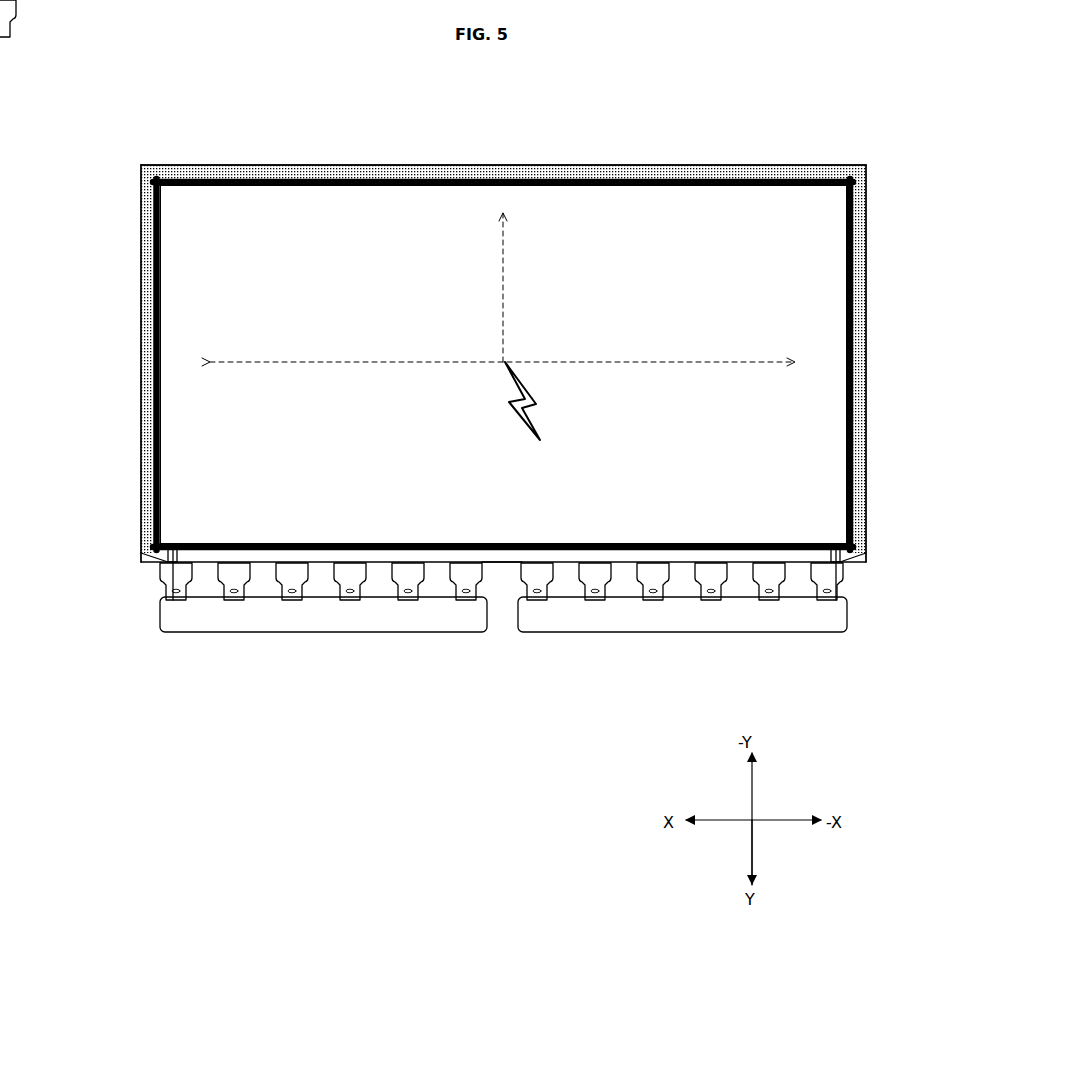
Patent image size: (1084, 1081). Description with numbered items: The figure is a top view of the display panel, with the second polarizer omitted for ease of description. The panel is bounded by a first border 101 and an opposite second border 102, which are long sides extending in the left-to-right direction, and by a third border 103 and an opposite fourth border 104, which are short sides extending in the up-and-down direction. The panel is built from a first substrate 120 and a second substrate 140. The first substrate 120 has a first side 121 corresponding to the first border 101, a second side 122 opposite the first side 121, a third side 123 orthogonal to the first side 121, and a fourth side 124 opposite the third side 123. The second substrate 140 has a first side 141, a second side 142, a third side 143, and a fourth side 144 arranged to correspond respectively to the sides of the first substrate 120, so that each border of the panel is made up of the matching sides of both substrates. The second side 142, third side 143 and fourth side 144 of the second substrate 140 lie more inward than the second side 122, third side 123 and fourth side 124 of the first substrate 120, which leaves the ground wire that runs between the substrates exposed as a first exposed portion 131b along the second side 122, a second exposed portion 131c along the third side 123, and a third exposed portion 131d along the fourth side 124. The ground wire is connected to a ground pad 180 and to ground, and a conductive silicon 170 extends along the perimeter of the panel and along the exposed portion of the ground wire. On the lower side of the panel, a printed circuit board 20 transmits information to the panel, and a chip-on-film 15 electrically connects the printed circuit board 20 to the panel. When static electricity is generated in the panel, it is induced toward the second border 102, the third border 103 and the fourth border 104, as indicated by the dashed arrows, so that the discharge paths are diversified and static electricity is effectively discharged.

The chip-on-film 15 is at (160, 578).
The printed circuit board 20 is at (207, 630).
The first border 101 is at (500, 585).
The second border 102 is at (657, 149).
The third border 103 is at (870, 440).
The fourth border 104 is at (129, 480).
The first substrate 120 is at (505, 558).
The first side 121 is at (445, 568).
The second side 122 is at (555, 168).
The third side 123 is at (867, 256).
The fourth side 124 is at (141, 243).
The first exposed portion 131b is at (347, 180).
The second exposed portion 131c is at (853, 369).
The third exposed portion 131d is at (141, 338).
The second substrate 140 is at (628, 533).
The first side 141 is at (472, 548).
The second side 142 is at (413, 186).
The third side 143 is at (848, 298).
The fourth side 144 is at (160, 281).
The conductive silicon 170 is at (153, 416).
The ground pad 180 is at (141, 553).